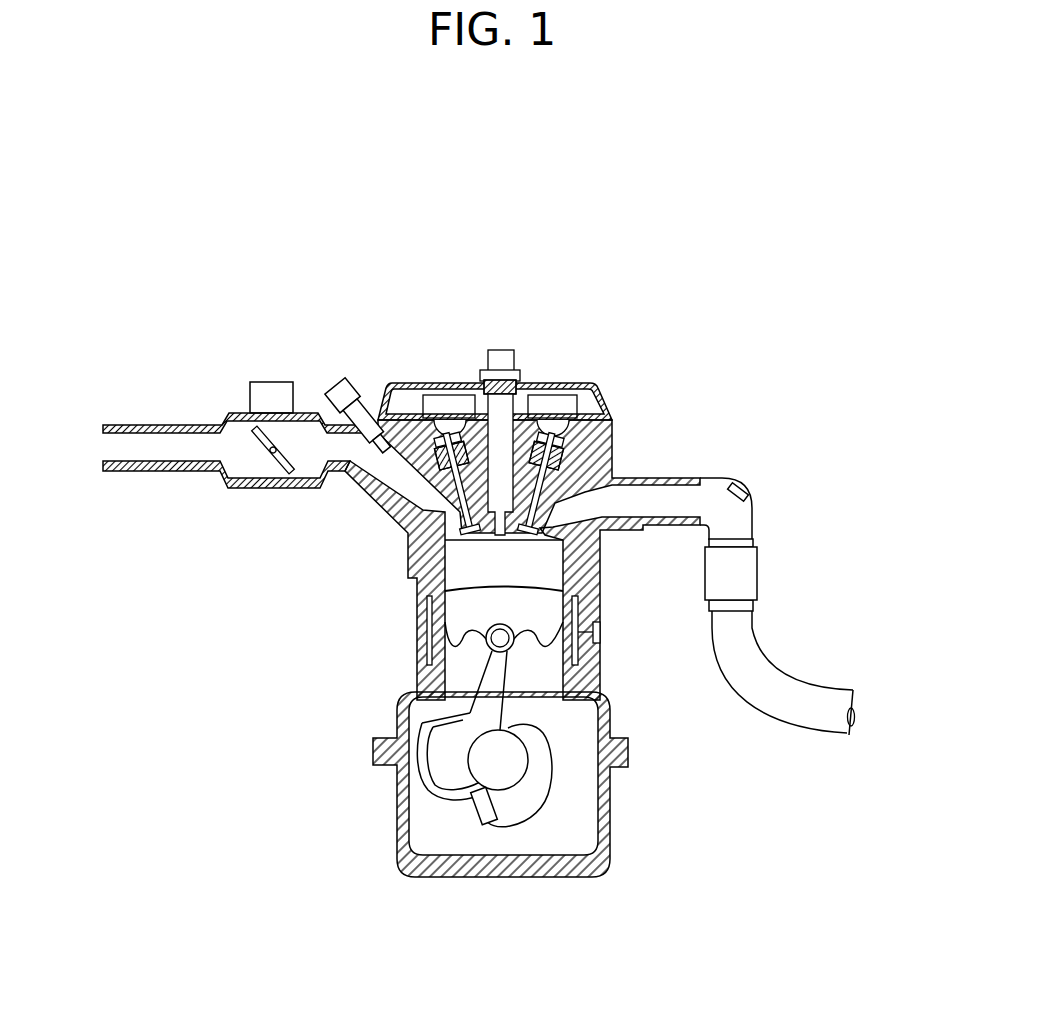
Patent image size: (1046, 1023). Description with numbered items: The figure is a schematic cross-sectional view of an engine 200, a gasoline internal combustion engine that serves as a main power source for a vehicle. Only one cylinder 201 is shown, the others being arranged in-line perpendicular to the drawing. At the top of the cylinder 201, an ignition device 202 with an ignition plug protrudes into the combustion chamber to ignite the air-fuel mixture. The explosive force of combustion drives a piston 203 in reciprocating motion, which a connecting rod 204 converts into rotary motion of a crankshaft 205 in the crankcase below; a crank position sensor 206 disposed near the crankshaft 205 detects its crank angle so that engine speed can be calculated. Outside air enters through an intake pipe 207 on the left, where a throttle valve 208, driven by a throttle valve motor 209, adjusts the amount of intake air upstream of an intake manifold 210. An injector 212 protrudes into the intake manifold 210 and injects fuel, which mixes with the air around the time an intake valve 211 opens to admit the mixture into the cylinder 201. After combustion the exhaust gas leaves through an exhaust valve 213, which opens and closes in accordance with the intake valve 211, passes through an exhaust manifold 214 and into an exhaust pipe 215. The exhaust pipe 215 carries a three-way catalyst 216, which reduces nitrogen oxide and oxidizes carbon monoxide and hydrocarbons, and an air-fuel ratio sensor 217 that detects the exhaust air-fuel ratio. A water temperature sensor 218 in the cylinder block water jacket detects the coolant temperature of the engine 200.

The engine 200 is at (496, 503).
The cylinder 201 is at (435, 678).
The ignition device 202 is at (508, 350).
The piston 203 is at (457, 622).
The connecting rod 204 is at (422, 724).
The crankshaft 205 is at (508, 768).
The crank position sensor 206 is at (472, 808).
The intake pipe 207 is at (190, 452).
The throttle valve 208 is at (277, 468).
The throttle valve motor 209 is at (250, 382).
The intake manifold 210 is at (417, 487).
The intake valve 211 is at (392, 510).
The injector 212 is at (338, 380).
The exhaust valve 213 is at (565, 528).
The exhaust manifold 214 is at (625, 500).
The exhaust pipe 215 is at (818, 692).
The three-way catalyst 216 is at (755, 580).
The air-fuel ratio sensor 217 is at (746, 488).
The water temperature sensor 218 is at (598, 640).